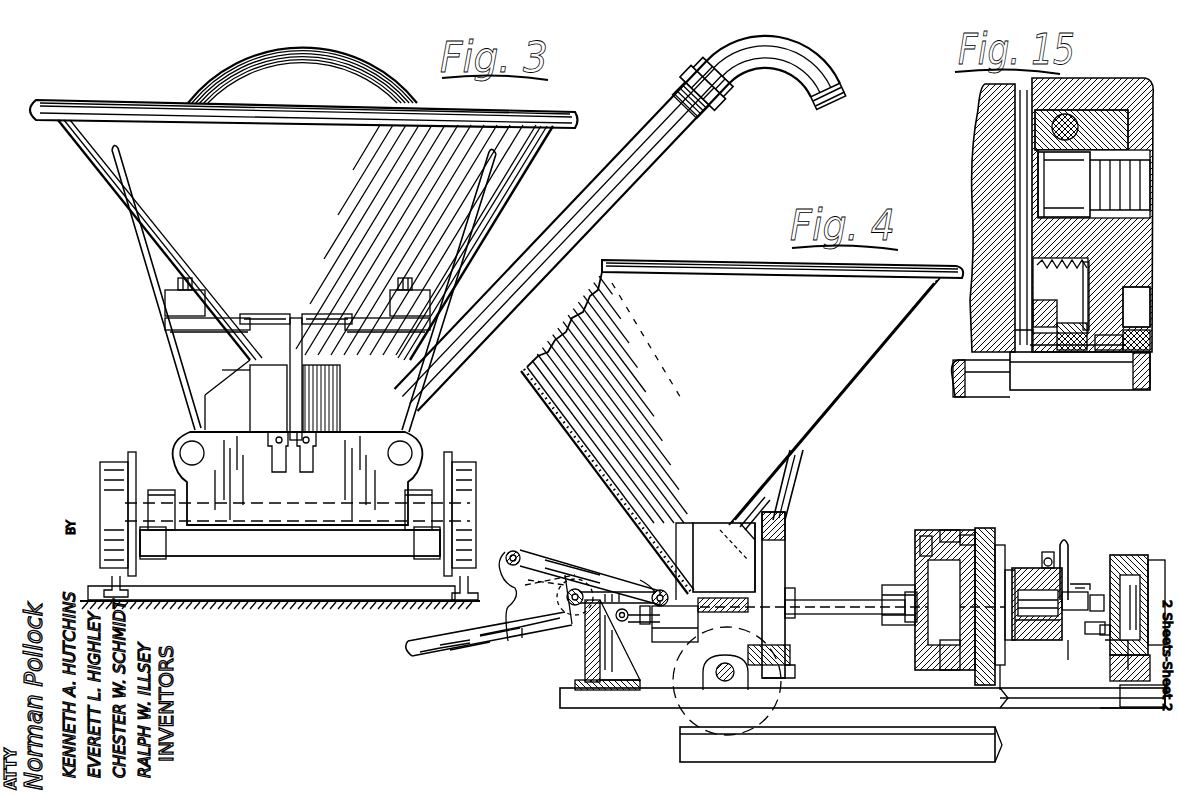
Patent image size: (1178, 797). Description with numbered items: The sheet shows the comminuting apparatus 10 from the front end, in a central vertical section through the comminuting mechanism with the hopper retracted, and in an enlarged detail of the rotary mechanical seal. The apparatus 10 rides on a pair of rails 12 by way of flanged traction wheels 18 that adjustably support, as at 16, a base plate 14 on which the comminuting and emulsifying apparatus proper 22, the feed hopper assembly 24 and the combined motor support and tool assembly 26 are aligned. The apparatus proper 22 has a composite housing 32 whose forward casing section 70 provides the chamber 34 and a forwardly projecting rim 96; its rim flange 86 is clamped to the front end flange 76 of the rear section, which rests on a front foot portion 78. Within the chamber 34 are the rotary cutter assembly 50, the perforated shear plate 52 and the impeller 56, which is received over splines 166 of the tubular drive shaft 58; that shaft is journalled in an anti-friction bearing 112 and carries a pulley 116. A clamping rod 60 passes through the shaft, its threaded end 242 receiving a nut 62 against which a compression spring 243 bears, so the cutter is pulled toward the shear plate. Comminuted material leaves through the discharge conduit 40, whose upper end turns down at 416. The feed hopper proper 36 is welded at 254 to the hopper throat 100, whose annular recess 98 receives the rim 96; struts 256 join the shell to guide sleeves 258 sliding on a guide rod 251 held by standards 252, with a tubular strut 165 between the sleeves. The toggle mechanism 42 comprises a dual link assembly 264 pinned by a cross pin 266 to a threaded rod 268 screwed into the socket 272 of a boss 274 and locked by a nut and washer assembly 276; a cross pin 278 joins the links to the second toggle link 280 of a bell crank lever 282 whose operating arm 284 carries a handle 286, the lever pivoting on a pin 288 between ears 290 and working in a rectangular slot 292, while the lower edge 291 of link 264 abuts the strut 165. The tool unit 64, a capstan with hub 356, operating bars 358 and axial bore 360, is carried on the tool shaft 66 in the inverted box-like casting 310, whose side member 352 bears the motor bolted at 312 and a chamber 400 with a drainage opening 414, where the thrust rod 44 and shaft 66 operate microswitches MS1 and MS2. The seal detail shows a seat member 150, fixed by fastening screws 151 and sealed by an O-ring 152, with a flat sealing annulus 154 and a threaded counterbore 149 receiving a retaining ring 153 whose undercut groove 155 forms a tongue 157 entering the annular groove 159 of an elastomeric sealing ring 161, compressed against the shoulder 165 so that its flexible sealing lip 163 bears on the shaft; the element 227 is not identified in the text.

In FIG. 3, the comminuting apparatus 10 is at (95, 80).
In FIG. 4, the comminuting apparatus 10 is at (892, 455).
In FIG. 3, the rails 12 is at (125, 578).
In FIG. 4, the rails 12 is at (840, 748).
In FIG. 3, the base plate 14 is at (285, 545).
In FIG. 4, the base plate 14 is at (645, 705).
In FIG. 4, the adjustable support 16 is at (735, 722).
In FIG. 3, the flanged traction wheels 18 is at (112, 470).
In FIG. 4, the flanged traction wheels 18 is at (690, 706).
In FIG. 4, the comminuting and emulsifying apparatus proper 22 is at (1003, 540).
In FIG. 3, the feed hopper assembly 24 is at (280, 416).
In FIG. 4, the feed hopper assembly 24 is at (724, 557).
In FIG. 4, the combined motor support and manipulating tool assembly 26 is at (1140, 568).
In FIG. 4, the composite housing 32 is at (985, 528).
In FIG. 4, the chamber 34 is at (950, 648).
In FIG. 3, the feed hopper proper 36 is at (158, 125).
In FIG. 4, the feed hopper proper 36 is at (722, 280).
In FIG. 3, the discharge conduit 40 is at (655, 180).
In FIG. 3, the toggle joint mechanism 42 is at (275, 345).
In FIG. 4, the toggle joint mechanism 42 is at (522, 642).
In FIG. 4, the thrust rod 44 is at (1068, 640).
In FIG. 4, the rotary cutter assembly 50 is at (912, 580).
In FIG. 4, the perforated shear plate 52 is at (918, 555).
In FIG. 15, the impeller 56 is at (985, 134).
In FIG. 15, the tubular rotary drive shaft 58 is at (1040, 400).
In FIG. 4, the clamping rod 60 is at (1022, 588).
In FIG. 4, the nut 62 is at (1038, 622).
In FIG. 4, the tool unit 64 is at (1064, 560).
In FIG. 4, the tool shaft 66 is at (1096, 598).
In FIG. 4, the forward casing section 70 is at (948, 532).
In FIG. 4, the front end flange 76 is at (996, 528).
In FIG. 4, the front foot portion 78 is at (1000, 708).
In FIG. 4, the peripheral rim flange 86 is at (966, 530).
In FIG. 4, the forwardly projecting rim 96 is at (925, 538).
In FIG. 4, the annular recess 98 is at (795, 660).
In FIG. 4, the hopper throat 100 is at (655, 538).
In FIG. 4, the anti-friction bearing 112 is at (1002, 650).
In FIG. 4, the pulley 116 is at (1051, 549).
In FIG. 15, the threaded counterbore 149 is at (1020, 335).
In FIG. 15, the seat member 150 is at (1128, 115).
In FIG. 15, the fastening screws 151 is at (1062, 180).
In FIG. 15, the O-ring seal 152 is at (1072, 112).
In FIG. 15, the retaining ring 153 is at (1035, 312).
In FIG. 15, the flat sealing annulus 154 is at (1150, 335).
In FIG. 15, the undercut groove 155 is at (1040, 288).
In FIG. 15, the annular tongue 157 is at (1062, 355).
In FIG. 15, the annular groove 159 is at (1070, 345).
In FIG. 15, the elastomeric sealing ring 161 is at (1110, 360).
In FIG. 15, the flexible sealing lip 163 is at (1030, 385).
In FIG. 4, the tubular strut 165 is at (632, 622).
In FIG. 15, the tubular strut 165 is at (1136, 307).
In FIG. 4, the splines 166 is at (935, 650).
In FIG. 4, the support column 227 is at (790, 556).
In FIG. 4, the threaded end region 242 is at (1084, 579).
In FIG. 4, the helical compression spring 243 is at (1040, 630).
In FIG. 3, the guide rod 251 is at (188, 445).
In FIG. 4, the guide rod 251 is at (792, 590).
In FIG. 3, the standards 252 is at (160, 488).
In FIG. 4, the standards 252 is at (585, 650).
In FIG. 4, the weld 254 is at (747, 497).
In FIG. 3, the supporting struts 256 is at (157, 300).
In FIG. 4, the supporting struts 256 is at (792, 484).
In FIG. 4, the guide sleeves 258 is at (652, 630).
In FIG. 4, the dual link assembly 264 is at (577, 590).
In FIG. 4, the cross pin 266 is at (643, 593).
In FIG. 4, the threaded rod 268 is at (686, 600).
In FIG. 4, the socket 272 is at (692, 545).
In FIG. 4, the boss 274 is at (700, 615).
In FIG. 4, the nut and washer assembly 276 is at (703, 640).
In FIG. 4, the cross pin 278 is at (515, 552).
In FIG. 3, the second toggle link 280 is at (320, 393).
In FIG. 4, the second toggle link 280 is at (409, 660).
In FIG. 3, the bell crank lever 282 is at (294, 316).
In FIG. 4, the bell crank lever 282 is at (492, 645).
In FIG. 3, the operating arm 284 is at (250, 378).
In FIG. 4, the operating arm 284 is at (447, 656).
In FIG. 3, the manipulating handle 286 is at (258, 316).
In FIG. 4, the manipulating handle 286 is at (432, 660).
In FIG. 3, the pin 288 is at (280, 460).
In FIG. 4, the pin 288 is at (586, 582).
In FIG. 4, the ears 290 is at (602, 690).
In FIG. 4, the lower edge 291 is at (562, 580).
In FIG. 3, the rectangular slot 292 is at (300, 465).
In FIG. 4, the rectangular slot 292 is at (518, 652).
In FIG. 4, the inverted box-like casting 310 is at (1110, 688).
In FIG. 3, the bolts 312 is at (172, 290).
In FIG. 4, the side member 352 is at (1135, 708).
In FIG. 4, the hub 356 is at (1078, 580).
In FIG. 4, the operating bars 358 is at (1078, 560).
In FIG. 4, the axial bore 360 is at (1090, 635).
In FIG. 4, the chamber 400 is at (1118, 665).
In FIG. 4, the opening 414 is at (1142, 701).
In FIG. 3, the downturned end 416 is at (805, 98).
In FIG. 4, the microswitch MS1 is at (1150, 602).
In FIG. 4, the microswitch MS2 is at (1094, 629).